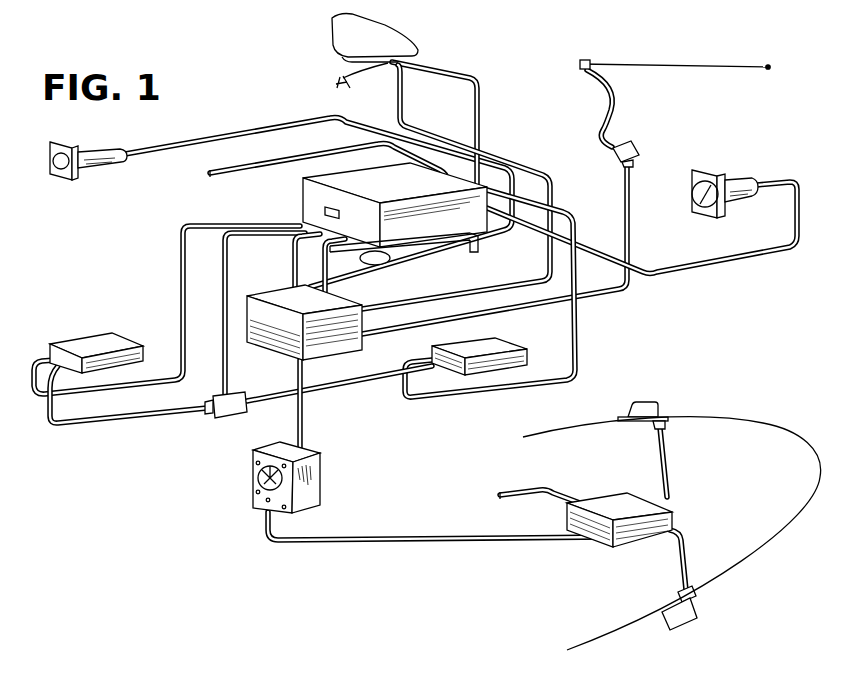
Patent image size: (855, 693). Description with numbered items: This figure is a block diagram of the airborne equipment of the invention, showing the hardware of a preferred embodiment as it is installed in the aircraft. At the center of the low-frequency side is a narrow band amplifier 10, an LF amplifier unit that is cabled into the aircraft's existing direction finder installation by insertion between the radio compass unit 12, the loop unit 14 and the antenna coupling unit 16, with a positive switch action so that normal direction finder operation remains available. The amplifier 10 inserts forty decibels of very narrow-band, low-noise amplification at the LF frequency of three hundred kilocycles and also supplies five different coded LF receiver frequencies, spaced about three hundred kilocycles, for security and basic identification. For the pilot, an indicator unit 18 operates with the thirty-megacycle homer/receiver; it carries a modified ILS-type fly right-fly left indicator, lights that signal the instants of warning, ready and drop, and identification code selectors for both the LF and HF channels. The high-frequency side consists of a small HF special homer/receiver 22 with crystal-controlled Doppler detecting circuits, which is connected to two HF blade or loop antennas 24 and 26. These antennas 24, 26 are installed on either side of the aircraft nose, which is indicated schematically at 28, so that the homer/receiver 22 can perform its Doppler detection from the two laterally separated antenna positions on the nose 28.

The narrow band amplifier 10 is at (342, 356).
The radio compass unit 12 is at (460, 265).
The loop unit 14 is at (416, 41).
The antenna coupling unit 16 is at (632, 128).
The indicator unit 18 is at (333, 480).
The HF special homer/receiver 22 is at (645, 552).
The HF blade antenna 24 is at (680, 392).
The HF blade antenna 26 is at (714, 606).
The aircraft nose 28 is at (790, 552).